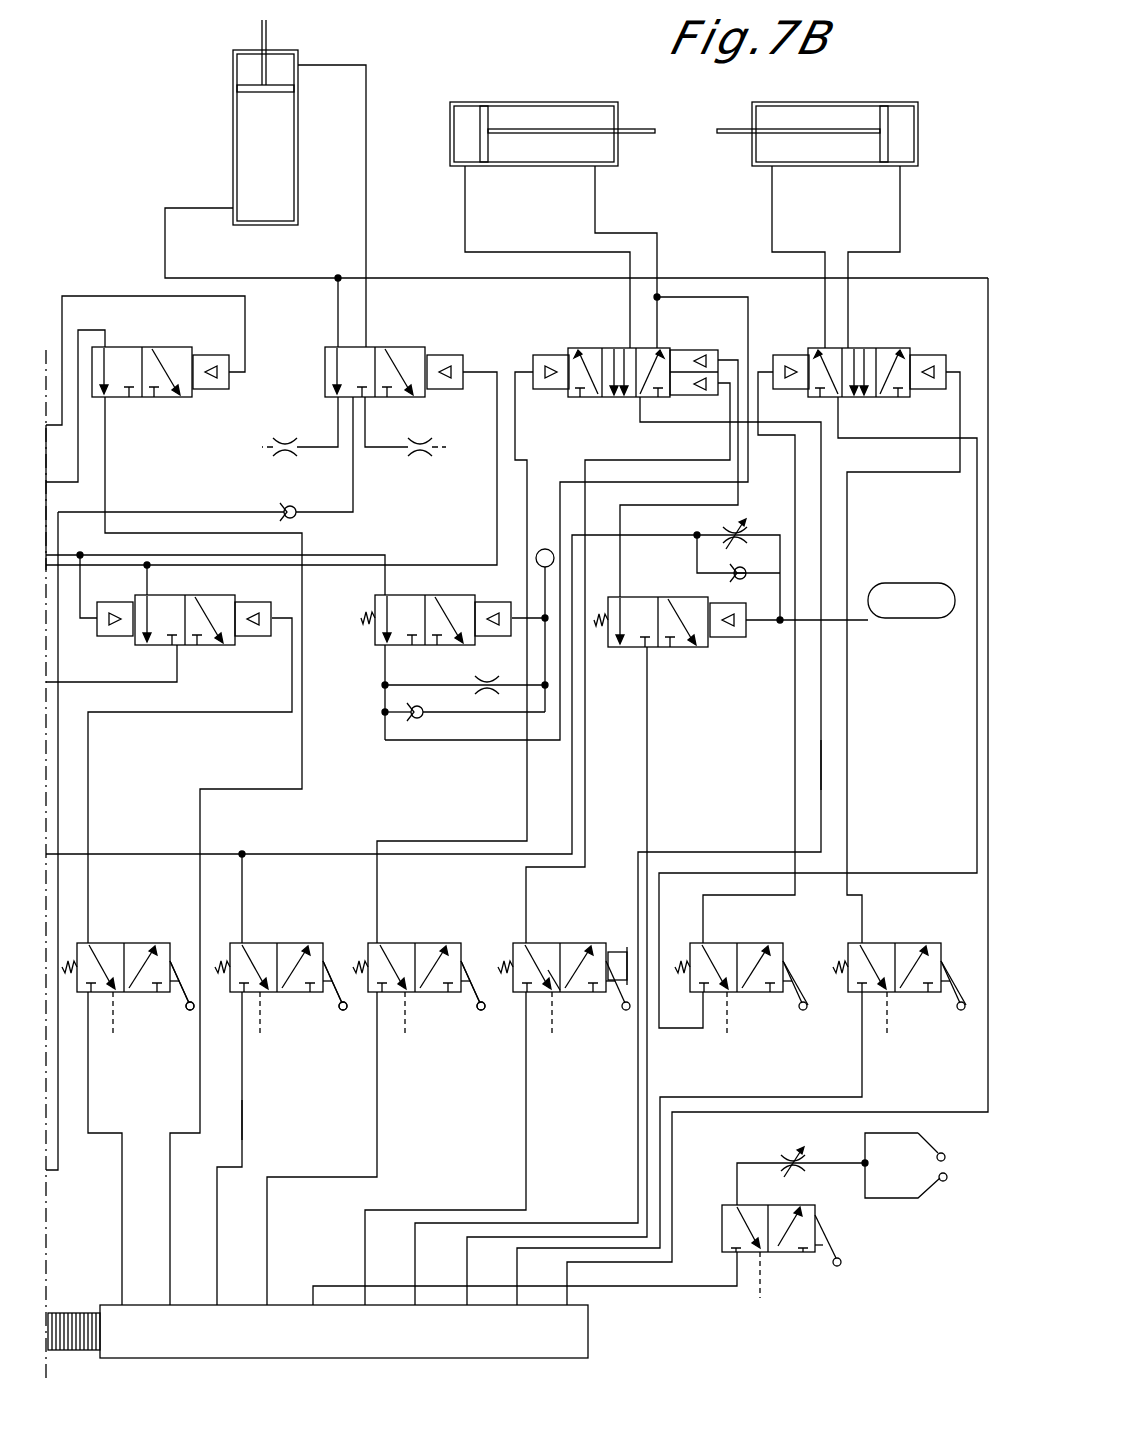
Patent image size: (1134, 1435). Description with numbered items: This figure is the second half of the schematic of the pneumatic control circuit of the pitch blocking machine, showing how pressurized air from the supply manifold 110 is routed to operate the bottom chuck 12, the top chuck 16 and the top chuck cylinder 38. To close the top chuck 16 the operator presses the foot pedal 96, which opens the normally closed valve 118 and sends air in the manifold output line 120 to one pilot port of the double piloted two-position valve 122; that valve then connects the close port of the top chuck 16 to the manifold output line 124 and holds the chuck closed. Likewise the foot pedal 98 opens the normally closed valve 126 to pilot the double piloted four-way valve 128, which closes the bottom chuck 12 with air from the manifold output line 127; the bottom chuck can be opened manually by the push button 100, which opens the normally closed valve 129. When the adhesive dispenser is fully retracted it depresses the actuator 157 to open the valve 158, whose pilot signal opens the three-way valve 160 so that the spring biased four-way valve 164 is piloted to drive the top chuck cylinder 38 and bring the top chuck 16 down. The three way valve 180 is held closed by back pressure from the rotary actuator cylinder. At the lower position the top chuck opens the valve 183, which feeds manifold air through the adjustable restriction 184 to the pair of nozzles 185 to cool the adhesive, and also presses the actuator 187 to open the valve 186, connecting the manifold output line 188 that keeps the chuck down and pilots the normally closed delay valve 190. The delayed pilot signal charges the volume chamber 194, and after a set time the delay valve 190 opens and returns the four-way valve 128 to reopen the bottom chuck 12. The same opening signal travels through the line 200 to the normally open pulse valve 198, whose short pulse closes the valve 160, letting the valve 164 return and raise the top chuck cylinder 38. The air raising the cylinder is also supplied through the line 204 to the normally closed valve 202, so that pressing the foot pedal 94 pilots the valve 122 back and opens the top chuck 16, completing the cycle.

The top chuck cylinder 38 is at (286, 146).
The bottom chuck 12 is at (624, 108).
The top chuck 16 is at (907, 117).
The normally open three way valve 180 is at (145, 356).
The spring biased four-way valve 164 is at (433, 352).
The double piloted four-way valve 128 is at (666, 353).
The double piloted two-position valve 122 is at (862, 352).
The manifold output line 124 is at (874, 440).
The line 200 is at (613, 485).
The line 204 is at (383, 278).
The normally closed three-way valve 160 is at (213, 602).
The normally open pulse valve 198 is at (404, 602).
The normally closed delay valve 190 is at (674, 644).
The volume chamber 194 is at (886, 586).
The manifold output line 127 is at (820, 762).
The actuator 157 is at (186, 945).
The normally closed valve 158 is at (130, 1000).
The normally closed valve 186 is at (268, 940).
The actuator 187 is at (333, 946).
The manifold output line 188 is at (245, 1123).
The normally closed valve 126 is at (394, 940).
The foot pedal 98 is at (476, 946).
The push button 100 is at (616, 950).
The normally closed valve 129 is at (560, 993).
The normally closed valve 202 is at (724, 941).
The foot pedal 94 is at (797, 948).
The normally closed valve 118 is at (870, 940).
The foot pedal 96 is at (956, 947).
The manifold output line 120 is at (862, 1066).
The normally closed valve 183 is at (790, 1250).
The adjustable restriction 184 is at (785, 1158).
The nozzles 185 is at (946, 1158).
The supply manifold 110 is at (590, 1350).